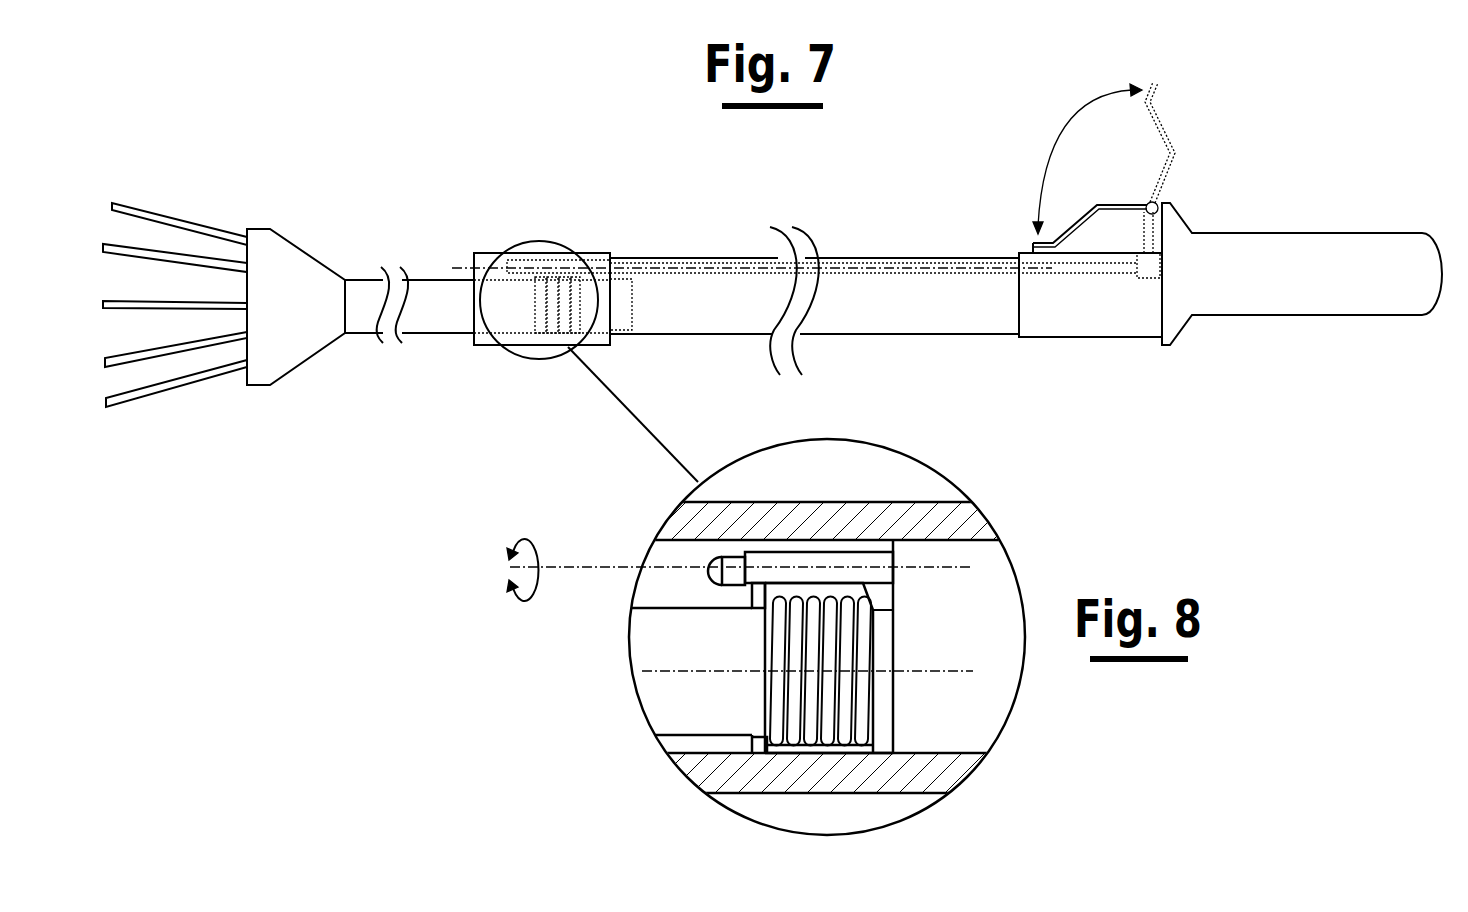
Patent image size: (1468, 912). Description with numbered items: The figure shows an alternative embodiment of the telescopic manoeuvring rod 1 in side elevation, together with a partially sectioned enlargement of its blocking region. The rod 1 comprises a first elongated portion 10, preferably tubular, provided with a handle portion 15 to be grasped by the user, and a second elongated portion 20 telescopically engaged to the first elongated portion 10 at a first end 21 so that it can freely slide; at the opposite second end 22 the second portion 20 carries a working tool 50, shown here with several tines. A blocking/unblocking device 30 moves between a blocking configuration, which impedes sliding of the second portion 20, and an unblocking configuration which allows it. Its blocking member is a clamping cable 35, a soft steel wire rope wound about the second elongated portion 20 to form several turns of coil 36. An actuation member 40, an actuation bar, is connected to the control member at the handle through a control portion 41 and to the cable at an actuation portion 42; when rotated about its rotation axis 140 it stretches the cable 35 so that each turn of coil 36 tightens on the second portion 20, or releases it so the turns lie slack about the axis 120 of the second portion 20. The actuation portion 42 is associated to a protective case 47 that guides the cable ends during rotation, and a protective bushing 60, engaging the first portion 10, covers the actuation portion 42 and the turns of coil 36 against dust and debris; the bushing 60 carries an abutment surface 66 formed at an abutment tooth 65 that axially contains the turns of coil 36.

In FIG. 7, the telescopic manoeuvring rod 1 is at (356, 353).
In FIG. 7, the first elongated portion 10 is at (895, 258).
In FIG. 8, the first elongated portion 10 is at (997, 593).
In FIG. 7, the handle portion 15 is at (1230, 234).
In FIG. 7, the second elongated portion 20 is at (445, 300).
In FIG. 8, the second elongated portion 20 is at (643, 643).
In FIG. 7, the first end 21 is at (618, 337).
In FIG. 7, the second end 22 is at (362, 330).
In FIG. 7, the blocking/unblocking device 30 is at (947, 291).
In FIG. 8, the clamping cable 35 is at (736, 703).
In FIG. 8, the turn of coil 36 is at (783, 753).
In FIG. 8, the actuation member 40 is at (710, 562).
In FIG. 7, the control portion 41 is at (1138, 296).
In FIG. 7, the actuation portion 42 is at (595, 247).
In FIG. 8, the actuation portion 42 is at (686, 584).
In FIG. 8, the protective case 47 is at (827, 552).
In FIG. 7, the working tool 50 is at (211, 431).
In FIG. 7, the protective bushing 60 is at (492, 253).
In FIG. 8, the protective bushing 60 is at (795, 515).
In FIG. 8, the abutment tooth 65 is at (752, 742).
In FIG. 8, the abutment surface 66 is at (782, 753).
In FIG. 8, the axis of the elongated portion 120 is at (657, 672).
In FIG. 8, the rotation axis 140 is at (967, 568).